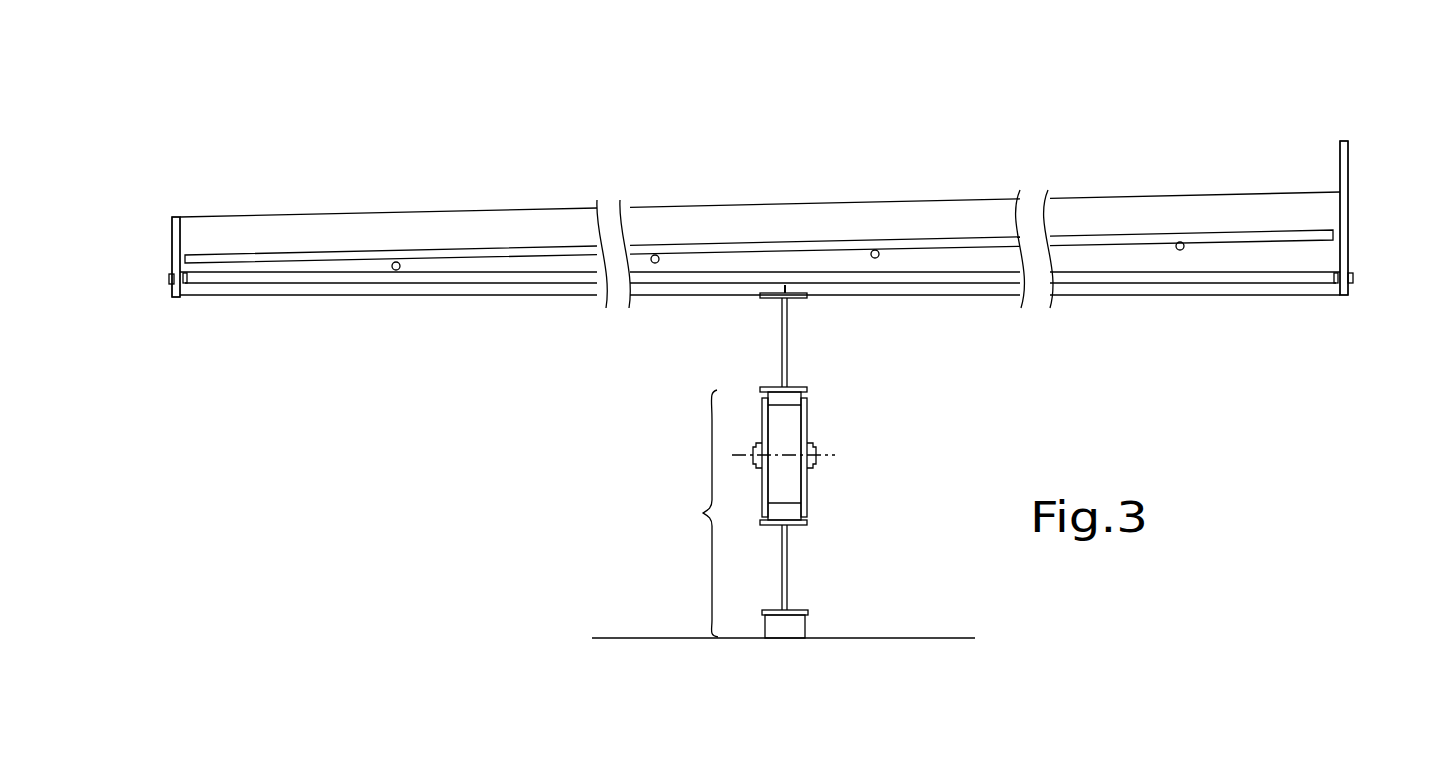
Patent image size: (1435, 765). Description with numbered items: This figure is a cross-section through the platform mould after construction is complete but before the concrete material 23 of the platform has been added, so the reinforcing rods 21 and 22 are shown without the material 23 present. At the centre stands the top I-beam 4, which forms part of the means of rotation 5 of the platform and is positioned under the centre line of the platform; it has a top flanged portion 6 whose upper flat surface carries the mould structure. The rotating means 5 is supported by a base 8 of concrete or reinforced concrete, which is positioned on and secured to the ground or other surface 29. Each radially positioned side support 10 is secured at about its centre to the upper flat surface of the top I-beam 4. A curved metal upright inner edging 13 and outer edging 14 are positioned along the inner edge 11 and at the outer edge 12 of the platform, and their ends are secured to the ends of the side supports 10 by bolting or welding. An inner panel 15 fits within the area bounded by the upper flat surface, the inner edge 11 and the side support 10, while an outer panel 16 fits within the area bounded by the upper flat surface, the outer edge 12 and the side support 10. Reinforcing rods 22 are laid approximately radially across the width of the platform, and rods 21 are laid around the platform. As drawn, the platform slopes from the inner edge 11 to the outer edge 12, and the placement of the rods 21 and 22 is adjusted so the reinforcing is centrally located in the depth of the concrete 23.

The top I-beam 4 is at (781, 326).
The means of rotation 5 is at (756, 513).
The top flanged portion 6 is at (797, 299).
The base 8 is at (790, 633).
The side support 10 is at (216, 281).
The inner edge 11 is at (1343, 120).
The outer edge 12 is at (176, 197).
The inner edging 13 is at (1348, 233).
The outer edging 14 is at (173, 239).
The inner panel 15 is at (1247, 291).
The outer panel 16 is at (346, 292).
The reinforcing rods 21 is at (877, 259).
The reinforcing rods 22 is at (829, 246).
The material of the platform 23 is at (441, 229).
The ground or other surface 29 is at (685, 647).